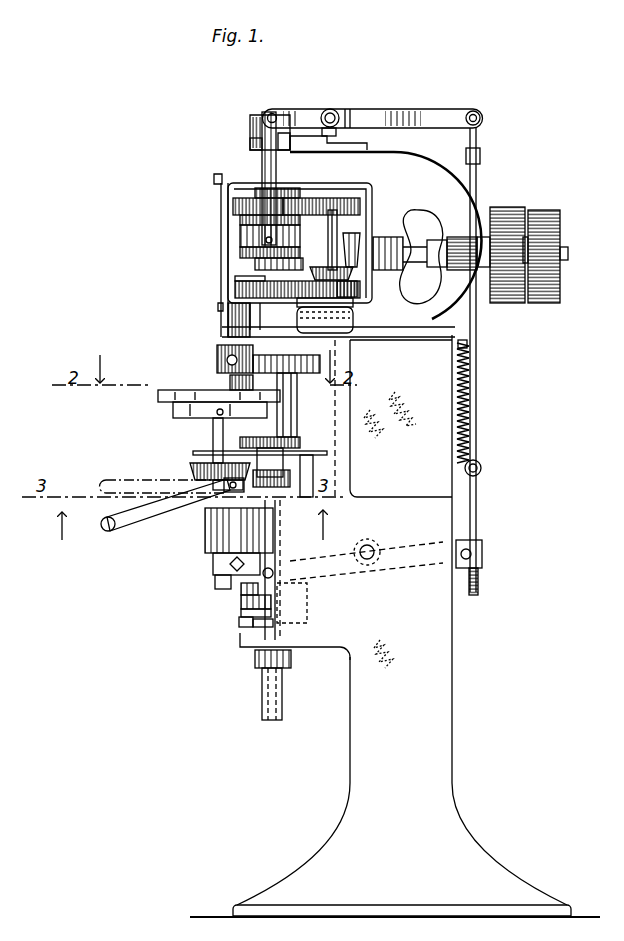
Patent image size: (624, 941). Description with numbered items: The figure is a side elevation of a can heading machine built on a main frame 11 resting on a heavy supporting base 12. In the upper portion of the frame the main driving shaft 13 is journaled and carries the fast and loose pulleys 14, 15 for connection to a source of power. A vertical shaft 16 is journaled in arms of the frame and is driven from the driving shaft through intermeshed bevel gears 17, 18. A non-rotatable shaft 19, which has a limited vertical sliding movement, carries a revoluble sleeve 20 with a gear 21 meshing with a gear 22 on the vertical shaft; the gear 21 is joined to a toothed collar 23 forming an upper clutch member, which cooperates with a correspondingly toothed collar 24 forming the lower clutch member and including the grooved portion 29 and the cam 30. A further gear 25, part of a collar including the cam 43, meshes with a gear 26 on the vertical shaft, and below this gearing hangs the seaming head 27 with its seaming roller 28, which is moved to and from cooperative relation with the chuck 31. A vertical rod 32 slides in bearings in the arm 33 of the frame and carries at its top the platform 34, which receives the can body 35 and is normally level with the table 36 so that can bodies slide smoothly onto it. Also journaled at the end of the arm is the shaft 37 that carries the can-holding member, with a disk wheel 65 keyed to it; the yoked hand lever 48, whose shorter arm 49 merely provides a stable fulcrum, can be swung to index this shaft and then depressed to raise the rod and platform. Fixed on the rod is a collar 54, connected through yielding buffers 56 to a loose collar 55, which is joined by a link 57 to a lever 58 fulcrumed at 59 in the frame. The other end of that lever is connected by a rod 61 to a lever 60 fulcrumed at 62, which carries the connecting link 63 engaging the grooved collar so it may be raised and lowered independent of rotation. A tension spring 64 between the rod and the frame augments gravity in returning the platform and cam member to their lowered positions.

The main frame 11 is at (452, 623).
The supporting base 12 is at (530, 892).
The main driving shaft 13 is at (412, 258).
The fast pulley 14 is at (517, 303).
The loose pulley 15 is at (553, 303).
The vertical shaft 16 is at (330, 245).
The bevel gear 17 is at (345, 300).
The bevel gear 18 is at (352, 243).
The shaft 19 is at (252, 143).
The sleeve 20 is at (255, 196).
The gear 21 is at (240, 214).
The gear 22 is at (372, 211).
The toothed collar 23 is at (240, 221).
The toothed collar 24 is at (240, 237).
The gear 25 is at (245, 297).
The gear 26 is at (360, 296).
The seaming head 27 is at (220, 350).
The seaming roller 28 is at (233, 380).
The grooved portion 29 is at (240, 252).
The cam 30 is at (255, 262).
The chuck 31 is at (300, 383).
The vertical rod or shaft 32 is at (265, 695).
The arm 33 is at (310, 637).
The platform 34 is at (300, 443).
The can body 35 is at (250, 423).
The table 36 is at (195, 453).
The shaft 37 is at (215, 588).
The cam 43 is at (240, 281).
The hand lever 48 is at (117, 522).
The arm 49 is at (227, 489).
The collar 54 is at (241, 588).
The loose collar 55 is at (243, 622).
The yielding buffers 56 is at (241, 610).
The link 57 is at (241, 597).
The lever 58 is at (333, 594).
The fulcrum 59 is at (372, 562).
The lever 60 is at (389, 108).
The rod 61 is at (478, 432).
The fulcrum 62 is at (331, 109).
The connecting rod or link 63 is at (265, 163).
The tension spring 64 is at (473, 392).
The disk wheel 65 is at (193, 475).